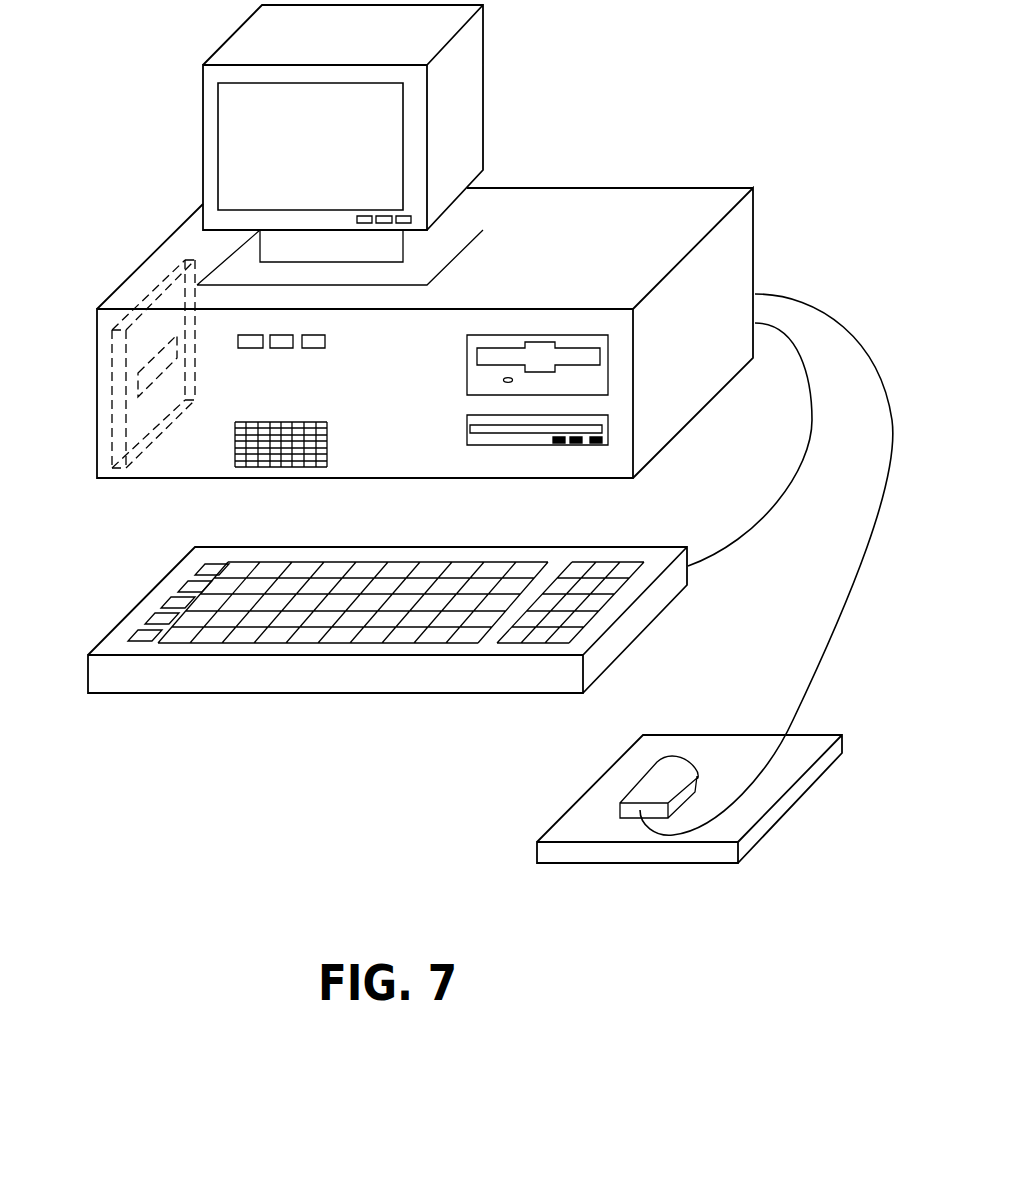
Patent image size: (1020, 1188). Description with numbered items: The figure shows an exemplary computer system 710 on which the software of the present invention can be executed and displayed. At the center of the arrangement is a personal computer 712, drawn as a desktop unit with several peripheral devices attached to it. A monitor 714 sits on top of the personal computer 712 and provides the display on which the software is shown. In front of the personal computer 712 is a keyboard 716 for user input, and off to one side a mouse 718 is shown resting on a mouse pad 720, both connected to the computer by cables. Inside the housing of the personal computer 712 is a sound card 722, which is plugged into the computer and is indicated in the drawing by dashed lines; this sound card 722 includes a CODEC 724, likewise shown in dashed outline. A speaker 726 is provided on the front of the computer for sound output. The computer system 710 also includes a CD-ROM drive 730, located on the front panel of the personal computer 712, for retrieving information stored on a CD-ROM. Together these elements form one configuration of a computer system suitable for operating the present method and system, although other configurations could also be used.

The computer system 710 is at (243, 865).
The personal computer 712 is at (620, 188).
The monitor 714 is at (483, 102).
The keyboard 716 is at (655, 620).
The mouse 718 is at (640, 785).
The mouse pad 720 is at (793, 805).
The sound card 722 is at (118, 470).
The CODEC 724 is at (135, 386).
The speaker 726 is at (327, 455).
The CD-ROM drive 730 is at (487, 445).